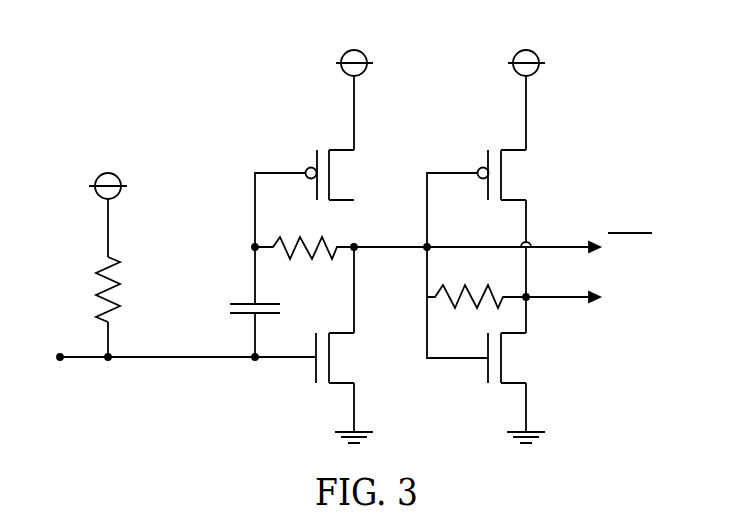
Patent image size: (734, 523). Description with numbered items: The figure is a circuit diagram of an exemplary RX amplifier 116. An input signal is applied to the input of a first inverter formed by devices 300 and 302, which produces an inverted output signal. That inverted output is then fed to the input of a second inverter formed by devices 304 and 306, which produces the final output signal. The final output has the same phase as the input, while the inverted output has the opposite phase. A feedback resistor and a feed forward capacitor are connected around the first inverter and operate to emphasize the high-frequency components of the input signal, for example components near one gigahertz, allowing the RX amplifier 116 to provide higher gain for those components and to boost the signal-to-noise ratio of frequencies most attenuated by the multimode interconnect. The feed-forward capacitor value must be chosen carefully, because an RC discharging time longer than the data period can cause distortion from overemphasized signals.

The RX amplifier 116 is at (157, 100).
The device 300 is at (343, 149).
The device 302 is at (341, 384).
The device 304 is at (515, 149).
The device 306 is at (513, 384).